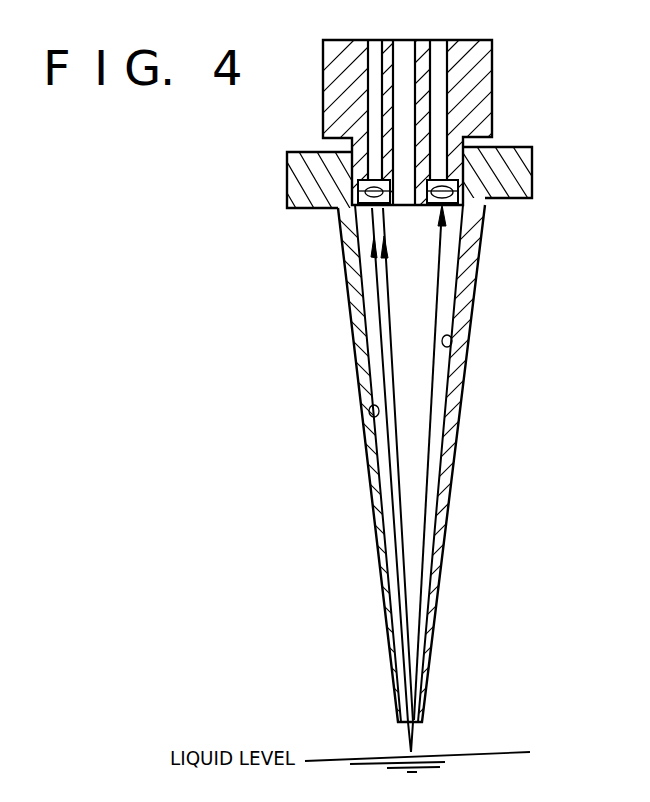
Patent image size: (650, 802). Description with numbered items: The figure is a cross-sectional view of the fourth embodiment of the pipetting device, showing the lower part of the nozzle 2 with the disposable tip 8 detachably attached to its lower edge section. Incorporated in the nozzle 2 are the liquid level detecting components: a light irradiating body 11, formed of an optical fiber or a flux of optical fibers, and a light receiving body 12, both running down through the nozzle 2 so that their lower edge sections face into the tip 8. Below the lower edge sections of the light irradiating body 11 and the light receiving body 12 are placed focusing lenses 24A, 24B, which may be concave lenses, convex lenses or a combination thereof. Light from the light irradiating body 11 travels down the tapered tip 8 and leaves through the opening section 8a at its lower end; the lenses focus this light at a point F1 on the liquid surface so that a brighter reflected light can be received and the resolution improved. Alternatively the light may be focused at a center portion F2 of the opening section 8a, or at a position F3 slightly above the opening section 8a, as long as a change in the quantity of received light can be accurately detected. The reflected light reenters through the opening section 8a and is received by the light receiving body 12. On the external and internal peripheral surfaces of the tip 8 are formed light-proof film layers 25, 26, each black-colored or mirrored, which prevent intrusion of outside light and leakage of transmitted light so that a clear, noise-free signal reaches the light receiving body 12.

The nozzle 2 is at (475, 100).
The disposable tip 8 is at (522, 170).
The opening section 8a is at (404, 727).
The light irradiating body 11 is at (375, 68).
The light receiving body 12 is at (440, 63).
The focusing lens 24A is at (356, 216).
The focusing lens 24B is at (456, 202).
The light-proof film layer 25 is at (478, 303).
The light-proof film layer 26 is at (450, 342).
The point on the liquid surface F1 is at (413, 753).
The center portion of the opening section F2 is at (415, 715).
The position slightly above the opening section F3 is at (411, 662).